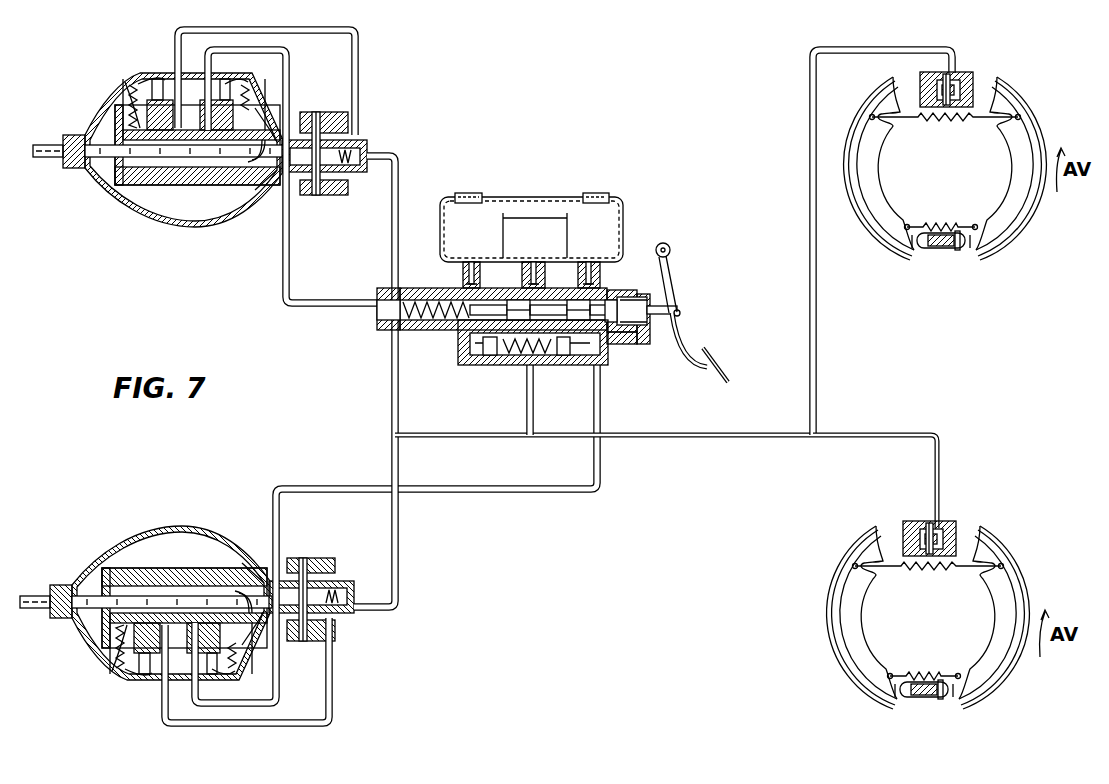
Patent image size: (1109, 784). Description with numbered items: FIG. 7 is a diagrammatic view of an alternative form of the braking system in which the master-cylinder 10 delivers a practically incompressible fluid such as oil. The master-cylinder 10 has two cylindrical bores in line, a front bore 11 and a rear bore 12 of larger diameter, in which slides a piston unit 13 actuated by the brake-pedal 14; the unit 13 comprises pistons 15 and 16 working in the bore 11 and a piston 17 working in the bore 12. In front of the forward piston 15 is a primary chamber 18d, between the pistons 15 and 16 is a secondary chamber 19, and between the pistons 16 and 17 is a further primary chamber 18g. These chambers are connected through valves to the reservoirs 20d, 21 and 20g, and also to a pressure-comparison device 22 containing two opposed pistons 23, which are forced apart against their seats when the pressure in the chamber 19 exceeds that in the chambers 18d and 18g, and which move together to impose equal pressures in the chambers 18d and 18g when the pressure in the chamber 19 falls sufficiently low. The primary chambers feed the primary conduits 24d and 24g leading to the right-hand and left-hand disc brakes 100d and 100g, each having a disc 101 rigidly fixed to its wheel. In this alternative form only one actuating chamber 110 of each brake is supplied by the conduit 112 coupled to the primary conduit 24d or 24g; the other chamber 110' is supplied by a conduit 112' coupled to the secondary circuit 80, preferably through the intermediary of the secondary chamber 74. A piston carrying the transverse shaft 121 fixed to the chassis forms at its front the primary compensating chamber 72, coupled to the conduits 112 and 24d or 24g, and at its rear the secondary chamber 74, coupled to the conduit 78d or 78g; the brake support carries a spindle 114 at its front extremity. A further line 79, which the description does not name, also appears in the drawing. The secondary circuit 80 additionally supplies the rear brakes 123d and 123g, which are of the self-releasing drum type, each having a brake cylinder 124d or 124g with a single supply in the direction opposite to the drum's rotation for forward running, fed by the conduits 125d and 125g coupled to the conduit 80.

The master-cylinder 10 is at (644, 355).
The front bore 11 is at (432, 292).
The rear bore 12 is at (612, 290).
The sliding piston 13 is at (645, 328).
The brake-pedal 14 is at (712, 358).
The forward piston 15 is at (520, 302).
The piston 16 is at (578, 302).
The piston 17 is at (646, 297).
The primary chamber 18d is at (432, 322).
The further primary chamber 18g is at (618, 332).
The secondary chamber 19 is at (540, 372).
The reservoir 20d is at (455, 212).
The reservoir 20g is at (612, 212).
The reservoir 21 is at (533, 220).
The pressure-comparison device 22 is at (510, 376).
The opposed pistons 23 is at (488, 356).
The primary conduit 24d is at (340, 315).
The primary conduit 24g is at (330, 489).
The primary compensating chamber 72 is at (288, 143).
The secondary chamber 74 is at (350, 168).
The conduit 78d is at (403, 168).
The conduit 78g is at (400, 562).
The connecting line 79 is at (400, 426).
The secondary circuit 80 is at (480, 440).
The right-hand disc brake 100d is at (193, 234).
The left-hand disc brake 100g is at (180, 527).
The disc 101 is at (252, 160).
The actuating chamber 110 is at (201, 376).
The actuating chamber 110' is at (112, 394).
The conduit 112 is at (264, 376).
The conduit 112' is at (285, 376).
The spindle 114 is at (45, 148).
The transverse shaft 121 is at (340, 121).
The rear brake 123d is at (1004, 255).
The rear brake 123g is at (1038, 586).
The brake cylinder 124d is at (952, 72).
The brake cylinder 124g is at (948, 524).
The conduit 125d is at (818, 318).
The conduit 125g is at (900, 435).